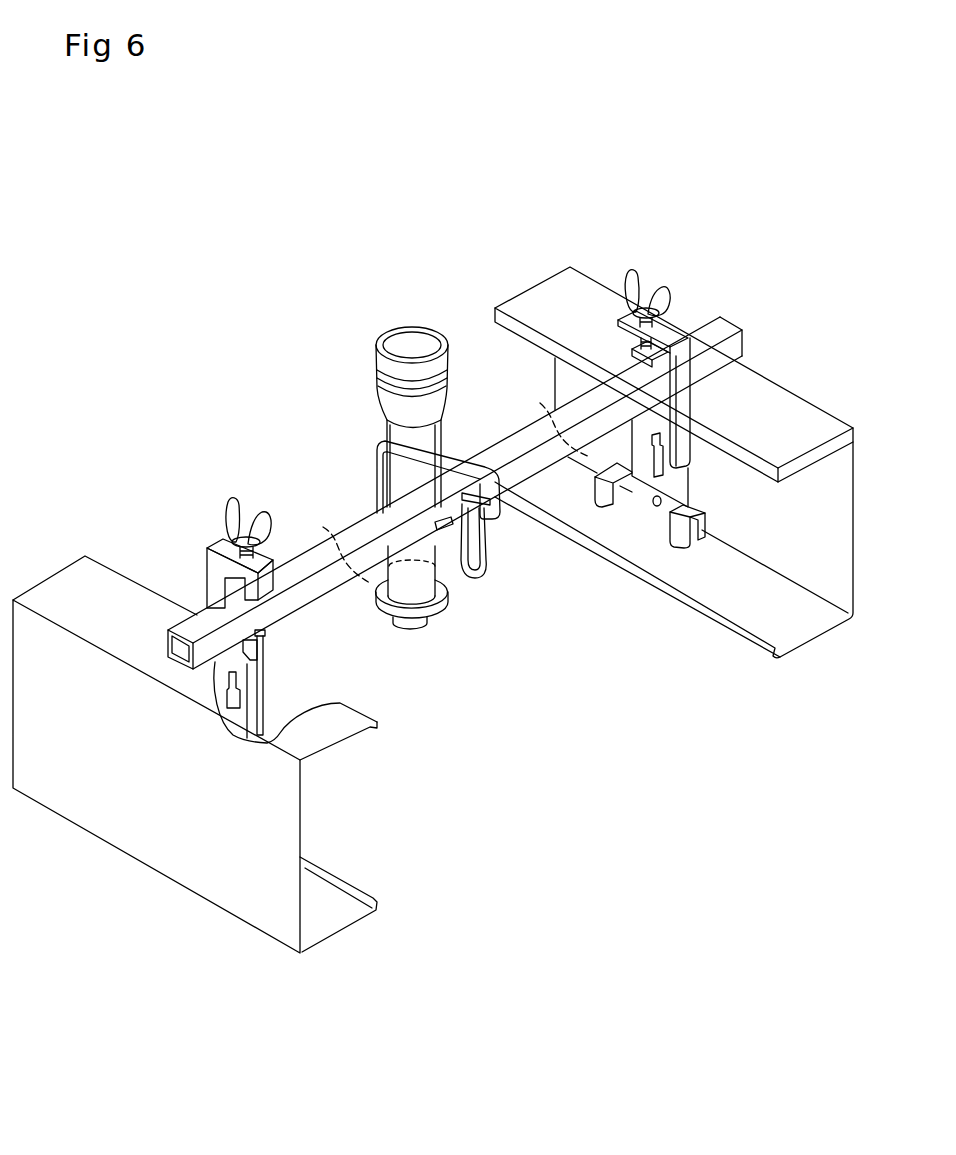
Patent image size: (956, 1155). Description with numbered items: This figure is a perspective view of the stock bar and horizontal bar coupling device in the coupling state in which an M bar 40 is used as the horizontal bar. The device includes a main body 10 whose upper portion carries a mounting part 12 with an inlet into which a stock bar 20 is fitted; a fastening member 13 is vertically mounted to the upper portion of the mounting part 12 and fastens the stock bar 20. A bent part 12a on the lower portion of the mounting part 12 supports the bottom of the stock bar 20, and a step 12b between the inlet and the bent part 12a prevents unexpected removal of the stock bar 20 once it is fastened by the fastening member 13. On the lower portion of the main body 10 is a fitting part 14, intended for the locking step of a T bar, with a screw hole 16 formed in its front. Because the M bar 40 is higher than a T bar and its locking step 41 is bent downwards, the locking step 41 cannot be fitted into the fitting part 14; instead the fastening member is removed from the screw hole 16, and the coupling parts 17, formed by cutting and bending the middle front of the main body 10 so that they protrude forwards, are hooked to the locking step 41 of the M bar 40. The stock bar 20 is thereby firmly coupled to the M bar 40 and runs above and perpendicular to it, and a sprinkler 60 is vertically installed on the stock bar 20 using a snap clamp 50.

The main body 10 is at (429, 577).
The mounting part 12 is at (225, 588).
The bent part 12a is at (268, 633).
The step 12b is at (262, 648).
The fastening member 13 is at (246, 497).
The fitting part 14 is at (692, 527).
The screw hole 16 is at (652, 505).
The coupling parts 17 is at (243, 738).
The stock bar 20 is at (305, 558).
The M bar 40 is at (674, 468).
The locking step 41 is at (747, 458).
The snap clamp 50 is at (460, 440).
The sprinkler 60 is at (448, 602).